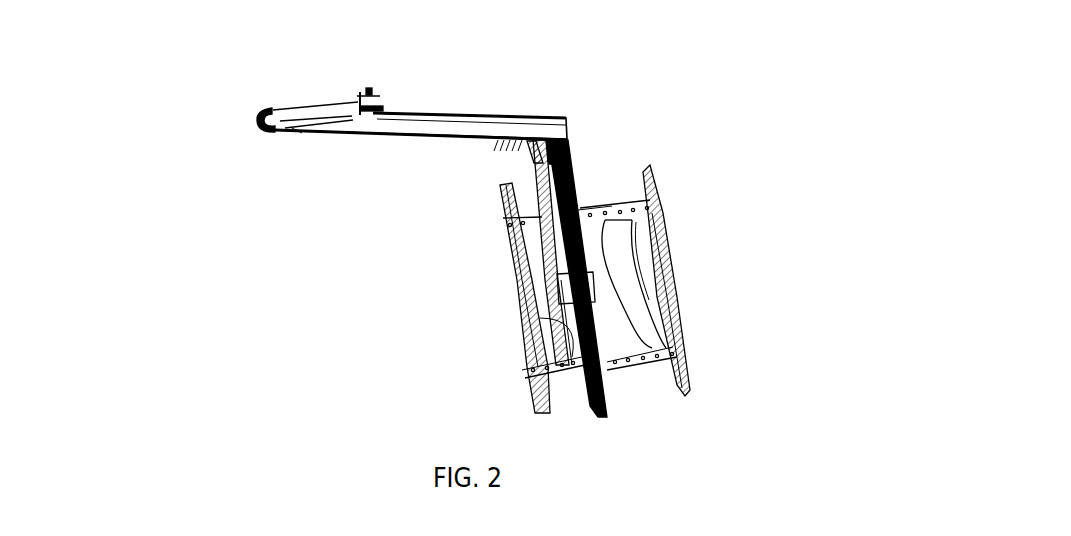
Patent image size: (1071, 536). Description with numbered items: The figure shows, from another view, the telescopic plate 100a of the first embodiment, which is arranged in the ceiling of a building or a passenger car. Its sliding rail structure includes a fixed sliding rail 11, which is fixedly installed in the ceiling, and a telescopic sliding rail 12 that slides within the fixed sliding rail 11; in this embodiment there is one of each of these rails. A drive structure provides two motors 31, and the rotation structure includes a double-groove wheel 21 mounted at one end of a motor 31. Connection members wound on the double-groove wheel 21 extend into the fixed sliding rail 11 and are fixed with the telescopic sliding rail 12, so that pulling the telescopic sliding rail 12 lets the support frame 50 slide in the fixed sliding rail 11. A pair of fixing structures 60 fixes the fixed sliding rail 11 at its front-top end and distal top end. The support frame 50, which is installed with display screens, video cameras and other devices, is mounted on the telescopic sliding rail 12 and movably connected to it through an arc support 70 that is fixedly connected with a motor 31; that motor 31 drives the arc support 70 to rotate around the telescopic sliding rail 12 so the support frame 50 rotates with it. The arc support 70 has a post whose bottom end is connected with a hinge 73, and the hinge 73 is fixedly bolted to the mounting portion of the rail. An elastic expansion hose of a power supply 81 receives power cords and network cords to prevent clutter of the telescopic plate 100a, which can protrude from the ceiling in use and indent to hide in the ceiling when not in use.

The fixed sliding rail 11 is at (443, 112).
The telescopic sliding rail 12 is at (567, 177).
The double-groove wheel 21 is at (255, 113).
The motor 31 is at (292, 137).
The support frame 50 is at (640, 269).
The fixing structure 60 is at (533, 112).
The arc support 70 is at (600, 285).
The hinge 73 is at (572, 308).
The elastic expansion hose of a power supply 81 is at (536, 167).
The telescopic plate 100a is at (333, 349).